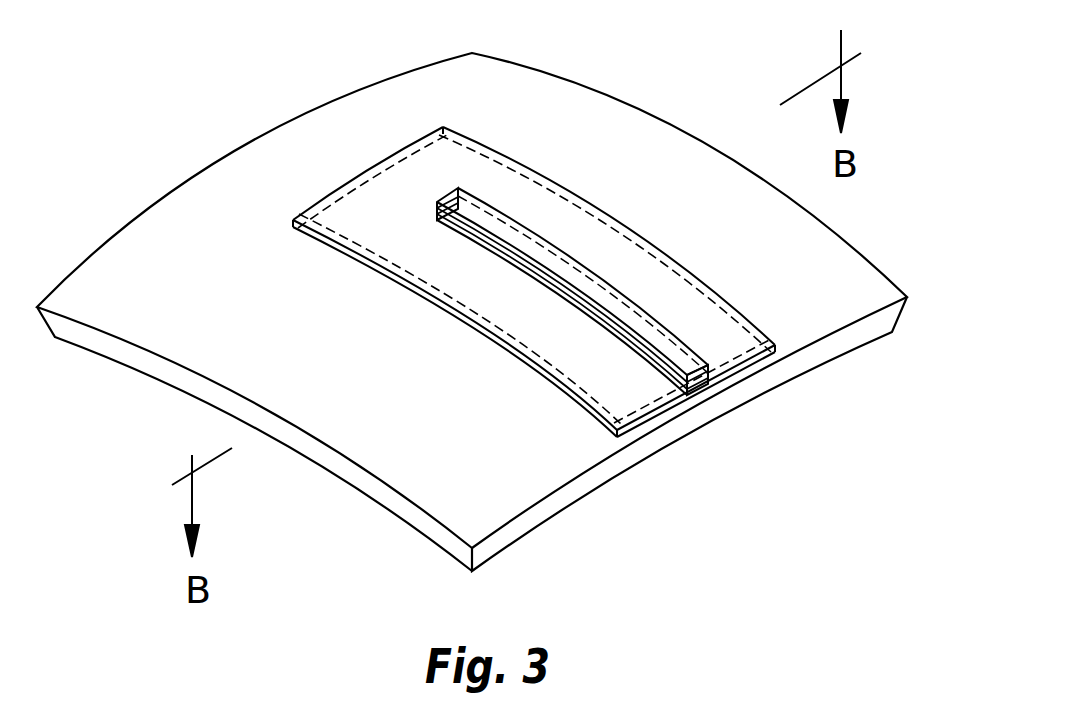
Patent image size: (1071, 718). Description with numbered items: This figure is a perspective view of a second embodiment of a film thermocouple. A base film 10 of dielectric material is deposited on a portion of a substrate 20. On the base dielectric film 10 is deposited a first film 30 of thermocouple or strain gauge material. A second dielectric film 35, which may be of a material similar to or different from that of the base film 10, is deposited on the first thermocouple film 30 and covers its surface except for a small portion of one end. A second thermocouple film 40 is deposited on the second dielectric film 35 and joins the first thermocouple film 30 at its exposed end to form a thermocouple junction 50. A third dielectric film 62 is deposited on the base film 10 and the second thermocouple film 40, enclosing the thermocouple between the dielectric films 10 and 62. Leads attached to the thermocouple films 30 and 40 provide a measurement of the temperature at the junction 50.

The base film 10 is at (762, 370).
The substrate 20 is at (855, 335).
The first film 30 is at (686, 383).
The second dielectric film 35 is at (678, 381).
The second thermocouple film 40 is at (688, 389).
The thermocouple junction 50 is at (580, 272).
The third dielectric film 62 is at (493, 152).